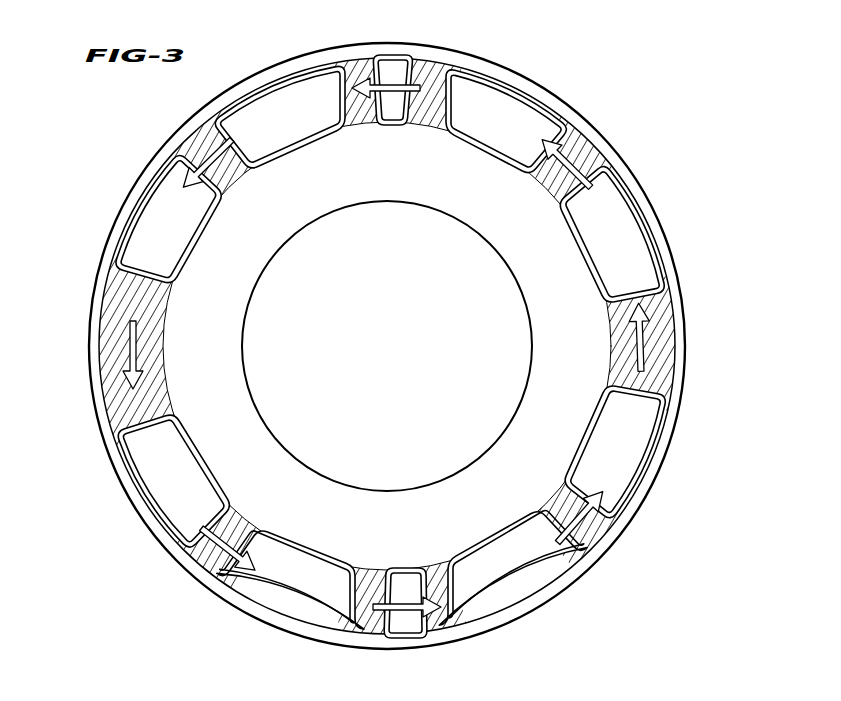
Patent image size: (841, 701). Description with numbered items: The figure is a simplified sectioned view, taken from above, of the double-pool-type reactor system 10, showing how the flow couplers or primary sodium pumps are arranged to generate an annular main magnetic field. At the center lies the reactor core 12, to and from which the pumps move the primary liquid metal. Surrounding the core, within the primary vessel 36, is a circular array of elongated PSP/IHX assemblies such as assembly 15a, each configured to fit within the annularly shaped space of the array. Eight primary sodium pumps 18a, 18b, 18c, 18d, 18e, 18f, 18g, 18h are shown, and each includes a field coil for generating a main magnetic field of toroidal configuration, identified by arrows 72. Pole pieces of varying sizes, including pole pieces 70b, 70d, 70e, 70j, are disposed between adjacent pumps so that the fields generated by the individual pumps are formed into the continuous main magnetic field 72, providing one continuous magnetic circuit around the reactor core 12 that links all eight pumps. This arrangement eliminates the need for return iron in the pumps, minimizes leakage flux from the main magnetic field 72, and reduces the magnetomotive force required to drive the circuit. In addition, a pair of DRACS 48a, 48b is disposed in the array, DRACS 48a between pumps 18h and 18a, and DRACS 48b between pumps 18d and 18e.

The reactor system 10 is at (586, 83).
The reactor core 12 is at (389, 324).
The PSP/IHX assembly 15a is at (324, 550).
The primary sodium pump 18a is at (295, 608).
The primary sodium pump 18b is at (153, 497).
The primary sodium pump 18c is at (157, 200).
The primary sodium pump 18d is at (290, 83).
The primary sodium pump 18e is at (495, 83).
The primary sodium pump 18f is at (628, 220).
The primary sodium pump 18g is at (613, 490).
The primary sodium pump 18h is at (517, 587).
The primary vessel 36 is at (353, 57).
The DRACS 48a is at (417, 566).
The DRACS 48b is at (410, 53).
The pole piece 70b is at (112, 365).
The pole piece 70d is at (364, 118).
The pole piece 70e is at (422, 118).
The pole piece 70j is at (372, 628).
The main magnetic field 72 is at (640, 332).